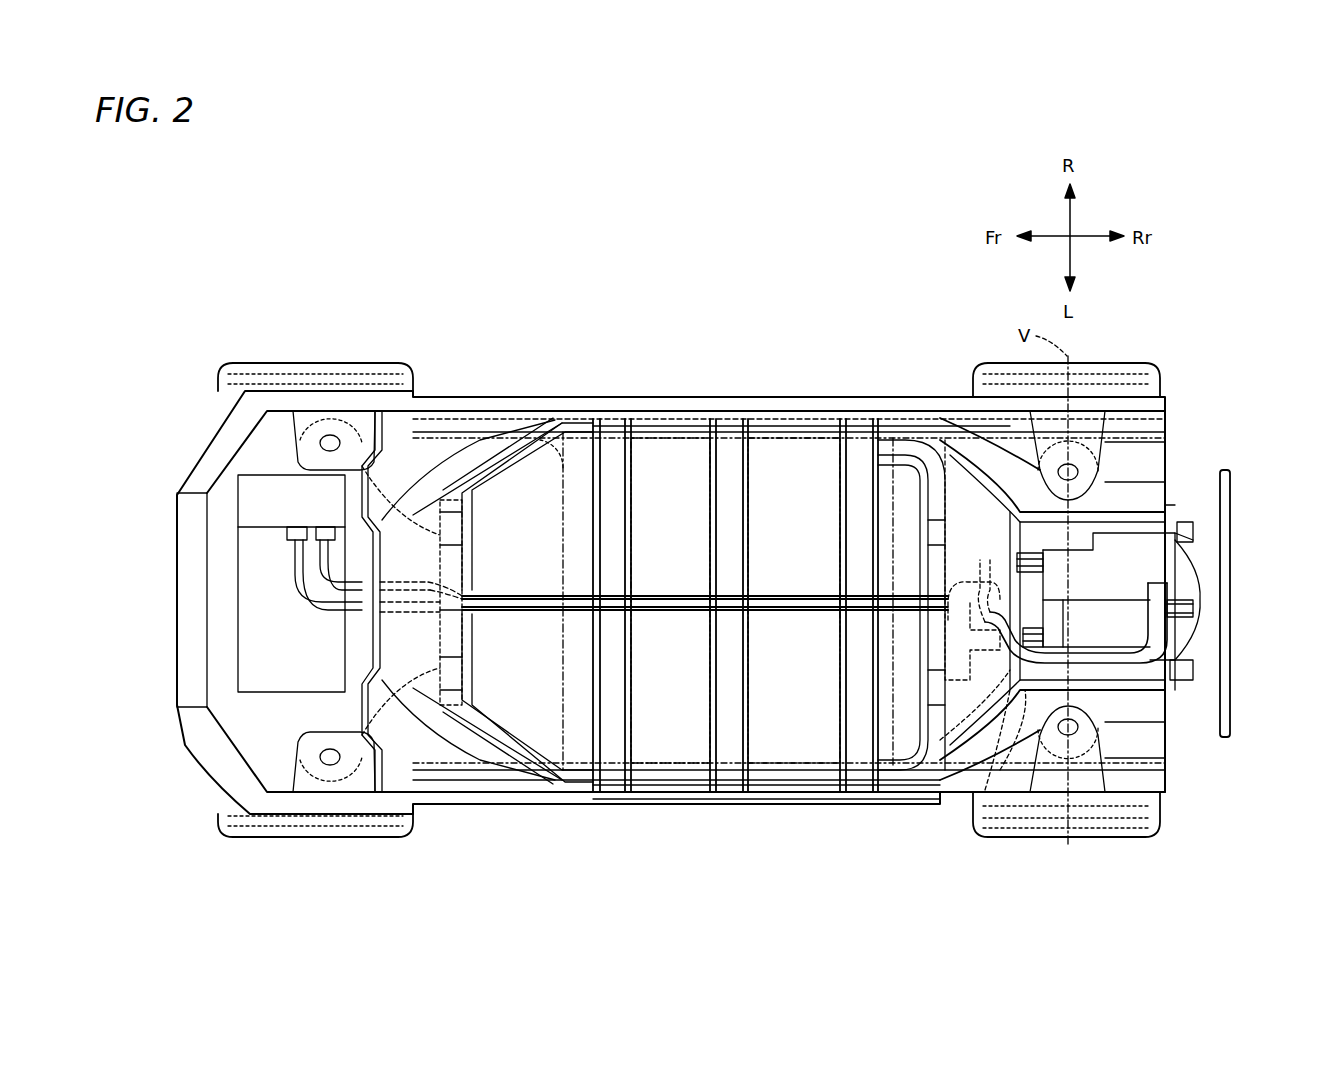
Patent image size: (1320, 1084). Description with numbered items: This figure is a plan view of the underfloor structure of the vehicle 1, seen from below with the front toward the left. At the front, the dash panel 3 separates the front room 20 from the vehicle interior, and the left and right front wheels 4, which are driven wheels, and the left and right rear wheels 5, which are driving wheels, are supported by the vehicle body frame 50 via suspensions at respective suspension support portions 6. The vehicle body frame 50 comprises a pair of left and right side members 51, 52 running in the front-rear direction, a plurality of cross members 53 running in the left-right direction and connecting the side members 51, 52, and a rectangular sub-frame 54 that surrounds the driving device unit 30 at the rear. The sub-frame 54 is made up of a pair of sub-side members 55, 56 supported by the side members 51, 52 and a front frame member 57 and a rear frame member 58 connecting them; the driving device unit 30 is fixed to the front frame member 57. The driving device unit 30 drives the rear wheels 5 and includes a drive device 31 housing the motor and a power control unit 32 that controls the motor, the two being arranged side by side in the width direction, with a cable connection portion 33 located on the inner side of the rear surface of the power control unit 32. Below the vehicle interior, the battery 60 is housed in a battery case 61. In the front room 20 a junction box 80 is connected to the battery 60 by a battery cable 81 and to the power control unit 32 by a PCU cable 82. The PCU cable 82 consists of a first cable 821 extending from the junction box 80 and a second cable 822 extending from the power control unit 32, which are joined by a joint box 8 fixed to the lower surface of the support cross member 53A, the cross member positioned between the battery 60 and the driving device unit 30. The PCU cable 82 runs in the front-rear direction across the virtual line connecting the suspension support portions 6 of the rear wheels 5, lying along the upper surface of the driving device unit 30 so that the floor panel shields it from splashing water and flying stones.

The vehicle 1 is at (752, 312).
The dash panel 3 is at (408, 548).
The front wheels 4 is at (343, 363).
The rear wheels 5 is at (1098, 363).
The suspension support portions 6 is at (283, 445).
The joint box 8 is at (975, 795).
The front room 20 is at (236, 617).
The driving device unit 30 is at (1272, 563).
The drive device 31 is at (1196, 612).
The power control unit 32 is at (1200, 582).
The cable connection portion 33 is at (1170, 545).
The vehicle body frame 50 is at (820, 395).
The side member 51 is at (765, 398).
The side member 52 is at (786, 804).
The cross members 53 is at (462, 495).
The support cross member 53A is at (985, 720).
The sub-frame 54 is at (1198, 556).
The sub-side member 55 is at (1192, 530).
The sub-side member 56 is at (1193, 650).
The front frame member 57 is at (1012, 710).
The rear frame member 58 is at (1192, 670).
The battery 60 is at (540, 462).
The battery case 61 is at (665, 418).
The junction box 80 is at (256, 562).
The battery cable 81 is at (300, 600).
The PCU cable 82 is at (336, 602).
The first cable 821 is at (795, 596).
The second cable 822 is at (1185, 682).